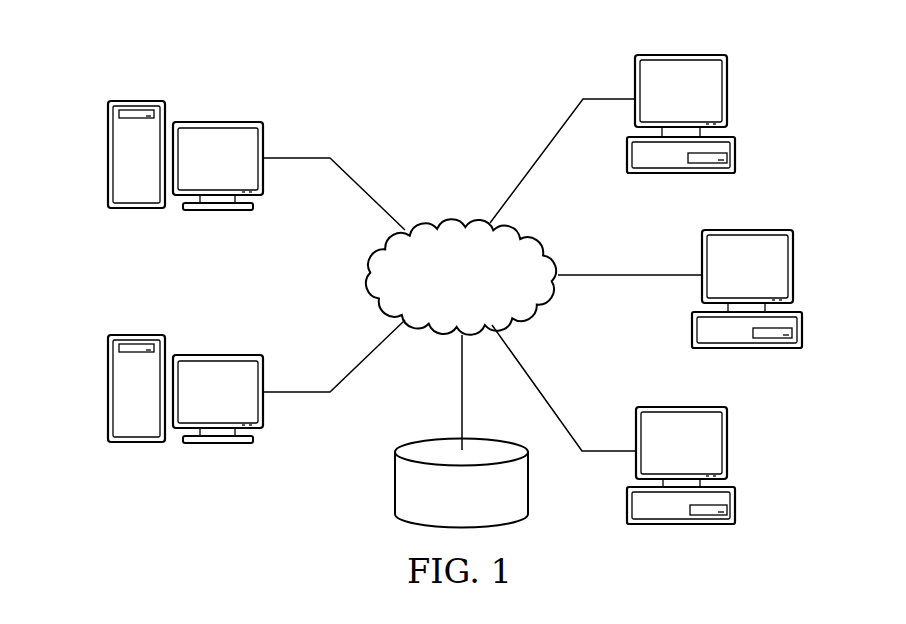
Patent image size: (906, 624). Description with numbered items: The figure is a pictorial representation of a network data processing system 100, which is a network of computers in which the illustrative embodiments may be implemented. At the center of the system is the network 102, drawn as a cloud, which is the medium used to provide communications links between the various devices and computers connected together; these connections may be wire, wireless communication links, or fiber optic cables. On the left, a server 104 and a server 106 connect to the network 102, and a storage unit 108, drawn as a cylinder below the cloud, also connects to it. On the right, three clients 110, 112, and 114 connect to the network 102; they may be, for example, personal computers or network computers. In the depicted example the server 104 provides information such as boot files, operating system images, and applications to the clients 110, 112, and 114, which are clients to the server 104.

The network data processing system 100 is at (331, 65).
The network 102 is at (455, 218).
The server 104 is at (108, 155).
The server 106 is at (108, 388).
The storage unit 108 is at (395, 482).
The client 110 is at (735, 155).
The client 112 is at (802, 328).
The client 114 is at (735, 505).